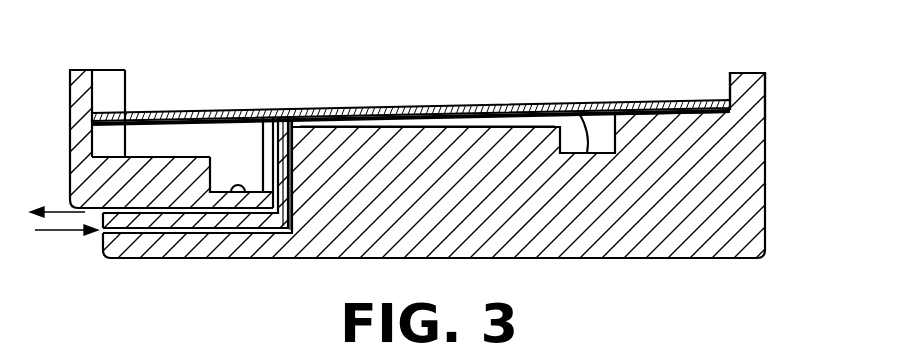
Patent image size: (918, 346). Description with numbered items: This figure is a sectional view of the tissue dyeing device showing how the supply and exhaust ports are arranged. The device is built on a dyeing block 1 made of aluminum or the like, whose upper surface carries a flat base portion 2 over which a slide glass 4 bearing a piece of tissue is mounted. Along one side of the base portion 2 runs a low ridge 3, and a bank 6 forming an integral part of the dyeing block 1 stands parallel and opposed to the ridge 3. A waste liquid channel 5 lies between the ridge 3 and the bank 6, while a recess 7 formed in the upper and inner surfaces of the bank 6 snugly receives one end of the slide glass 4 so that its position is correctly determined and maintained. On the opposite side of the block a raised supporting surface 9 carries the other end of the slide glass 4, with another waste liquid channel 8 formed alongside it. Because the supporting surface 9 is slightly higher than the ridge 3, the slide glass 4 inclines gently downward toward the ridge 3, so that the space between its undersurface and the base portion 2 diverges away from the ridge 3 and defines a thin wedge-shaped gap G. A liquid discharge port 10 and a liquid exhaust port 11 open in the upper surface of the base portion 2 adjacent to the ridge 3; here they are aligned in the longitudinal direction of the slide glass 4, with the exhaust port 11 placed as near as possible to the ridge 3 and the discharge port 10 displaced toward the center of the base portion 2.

The dyeing block 1 is at (752, 152).
The base portion 2 is at (505, 127).
The ridge 3 is at (263, 133).
The slide glass 4 is at (440, 106).
The waste liquid channel 5 is at (238, 190).
The bank 6 is at (70, 103).
The recess 7 is at (89, 103).
The waste liquid channel 8 is at (578, 105).
The supporting surface 9 is at (727, 102).
The liquid discharge port 10 is at (290, 122).
The liquid exhaust port 11 is at (278, 120).
The wedge-shaped gap G is at (542, 123).